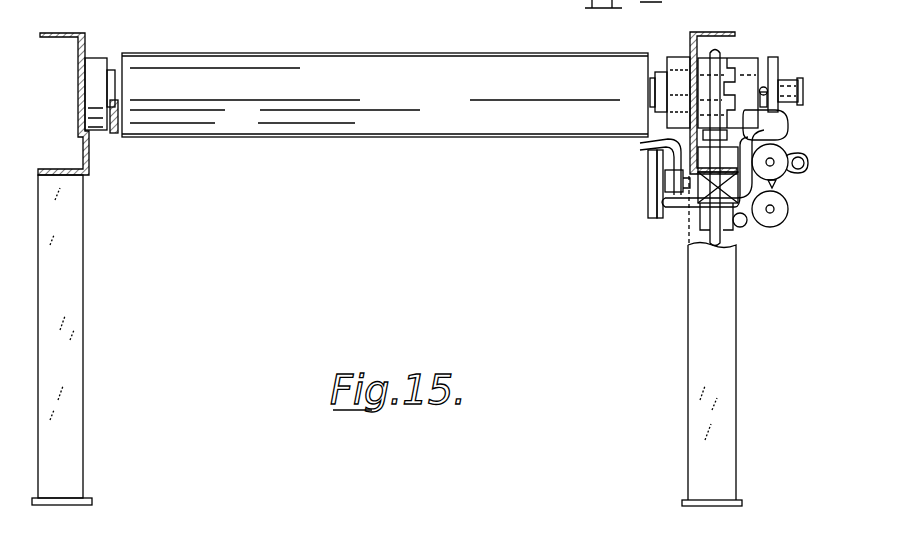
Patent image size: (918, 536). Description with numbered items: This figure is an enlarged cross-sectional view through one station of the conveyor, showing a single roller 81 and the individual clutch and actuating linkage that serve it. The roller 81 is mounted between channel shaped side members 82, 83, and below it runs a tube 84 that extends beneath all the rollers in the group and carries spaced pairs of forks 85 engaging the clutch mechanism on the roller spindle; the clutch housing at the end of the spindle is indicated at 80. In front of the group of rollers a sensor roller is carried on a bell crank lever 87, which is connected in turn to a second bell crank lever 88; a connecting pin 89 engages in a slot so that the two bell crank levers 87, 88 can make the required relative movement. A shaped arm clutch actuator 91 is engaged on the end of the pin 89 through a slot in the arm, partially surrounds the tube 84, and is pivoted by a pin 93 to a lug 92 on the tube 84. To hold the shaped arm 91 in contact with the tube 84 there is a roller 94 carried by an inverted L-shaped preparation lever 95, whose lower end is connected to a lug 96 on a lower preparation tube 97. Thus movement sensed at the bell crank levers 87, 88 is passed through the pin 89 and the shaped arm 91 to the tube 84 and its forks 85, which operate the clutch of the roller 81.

The drive housing block 80 is at (737, 58).
The roller 81 is at (348, 57).
The channel shaped side member 82 is at (63, 33).
The channel shaped side member 83 is at (717, 22).
The tube 84 is at (785, 143).
The fork 85 is at (757, 102).
The bell crank lever 87 is at (665, 172).
The second bell crank lever 88 is at (650, 198).
The connecting pin 89 is at (680, 167).
The shaped arm clutch actuator 91 is at (782, 157).
The lug 92 is at (790, 178).
The pin 93 is at (800, 168).
The roller 94 is at (787, 127).
The inverted L-shaped preparation lever 95 is at (738, 178).
The lug 96 is at (750, 224).
The preparation tube 97 is at (778, 227).